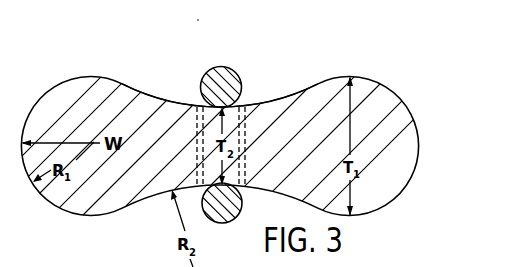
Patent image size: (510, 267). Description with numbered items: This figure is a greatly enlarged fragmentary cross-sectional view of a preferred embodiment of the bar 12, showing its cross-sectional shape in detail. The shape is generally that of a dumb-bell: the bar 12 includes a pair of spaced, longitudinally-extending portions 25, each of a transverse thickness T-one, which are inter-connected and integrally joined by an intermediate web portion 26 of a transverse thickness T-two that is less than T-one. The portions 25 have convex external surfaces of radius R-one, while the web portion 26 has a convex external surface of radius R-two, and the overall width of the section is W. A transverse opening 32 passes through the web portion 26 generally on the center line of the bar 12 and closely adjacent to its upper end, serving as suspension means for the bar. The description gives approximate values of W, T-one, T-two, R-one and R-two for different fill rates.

The elongated member cross-section 12 is at (384, 84).
The longitudinally-extending portions 25 is at (80, 93).
The intermediate web portion 26 is at (261, 100).
The transverse opening 32 is at (241, 115).